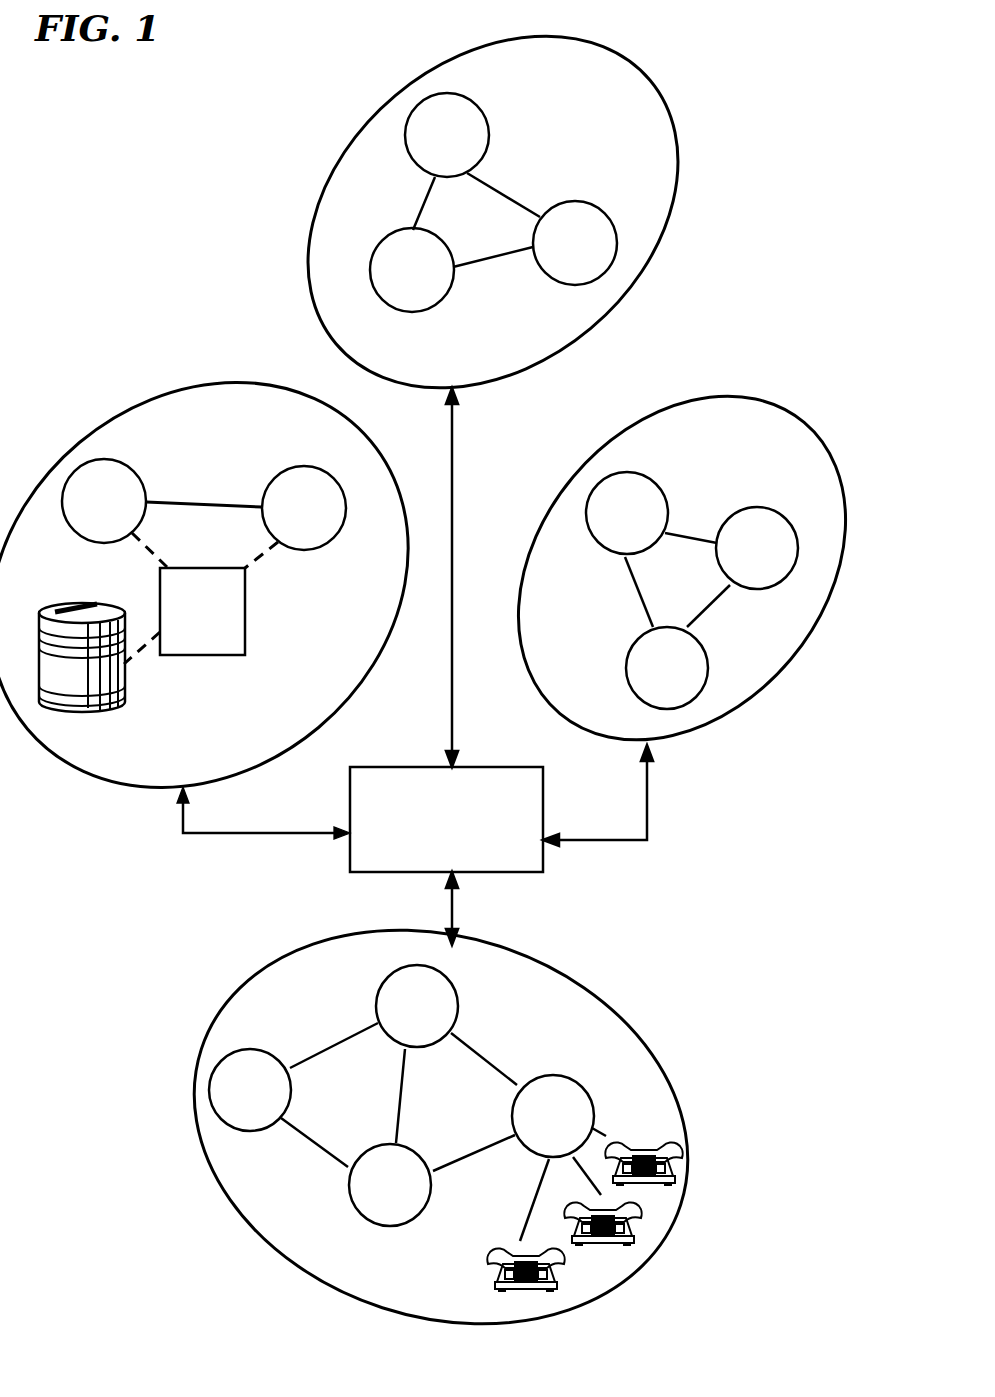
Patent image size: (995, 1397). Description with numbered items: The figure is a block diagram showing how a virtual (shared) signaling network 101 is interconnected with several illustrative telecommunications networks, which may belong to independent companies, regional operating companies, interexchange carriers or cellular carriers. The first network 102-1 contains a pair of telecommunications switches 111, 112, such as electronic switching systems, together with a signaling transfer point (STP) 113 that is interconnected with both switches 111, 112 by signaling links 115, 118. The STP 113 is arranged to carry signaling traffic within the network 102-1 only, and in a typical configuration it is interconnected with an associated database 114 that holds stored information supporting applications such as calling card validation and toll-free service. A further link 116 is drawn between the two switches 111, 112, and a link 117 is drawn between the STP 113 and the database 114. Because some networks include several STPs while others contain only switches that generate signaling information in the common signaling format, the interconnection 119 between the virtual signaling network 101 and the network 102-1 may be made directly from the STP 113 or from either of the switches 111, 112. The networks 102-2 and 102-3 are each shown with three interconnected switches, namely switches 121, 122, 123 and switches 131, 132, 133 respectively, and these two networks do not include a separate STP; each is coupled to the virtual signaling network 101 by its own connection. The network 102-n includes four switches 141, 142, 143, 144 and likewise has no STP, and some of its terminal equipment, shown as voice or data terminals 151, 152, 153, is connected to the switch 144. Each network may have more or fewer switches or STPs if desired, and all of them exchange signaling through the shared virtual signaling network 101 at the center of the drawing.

The virtual (shared) signaling network 101 is at (400, 766).
The telecommunications network 102-1 is at (194, 392).
The telecommunications network 102-2 is at (313, 200).
The telecommunications network 102-3 is at (742, 400).
The telecommunications network 102-n is at (585, 999).
The telecommunications switch 111 is at (130, 459).
The telecommunications switch 112 is at (291, 466).
The signaling transfer point (STP) 113 is at (247, 639).
The database 114 is at (48, 601).
The signaling link 115 is at (150, 552).
The trunk 116 is at (193, 499).
The signaling link 117 is at (152, 651).
The signaling link 118 is at (262, 559).
The interconnection 119 is at (232, 836).
The switch 121 is at (481, 109).
The switch 122 is at (378, 243).
The switch 123 is at (582, 203).
The switch 131 is at (665, 500).
The switch 132 is at (630, 648).
The switch 133 is at (750, 588).
The switch 141 is at (457, 993).
The switch 142 is at (250, 1049).
The switch 143 is at (370, 1143).
The switch 144 is at (544, 1075).
The voice or data terminal 151 is at (644, 1136).
The voice or data terminal 152 is at (606, 1242).
The voice or data terminal 153 is at (496, 1241).